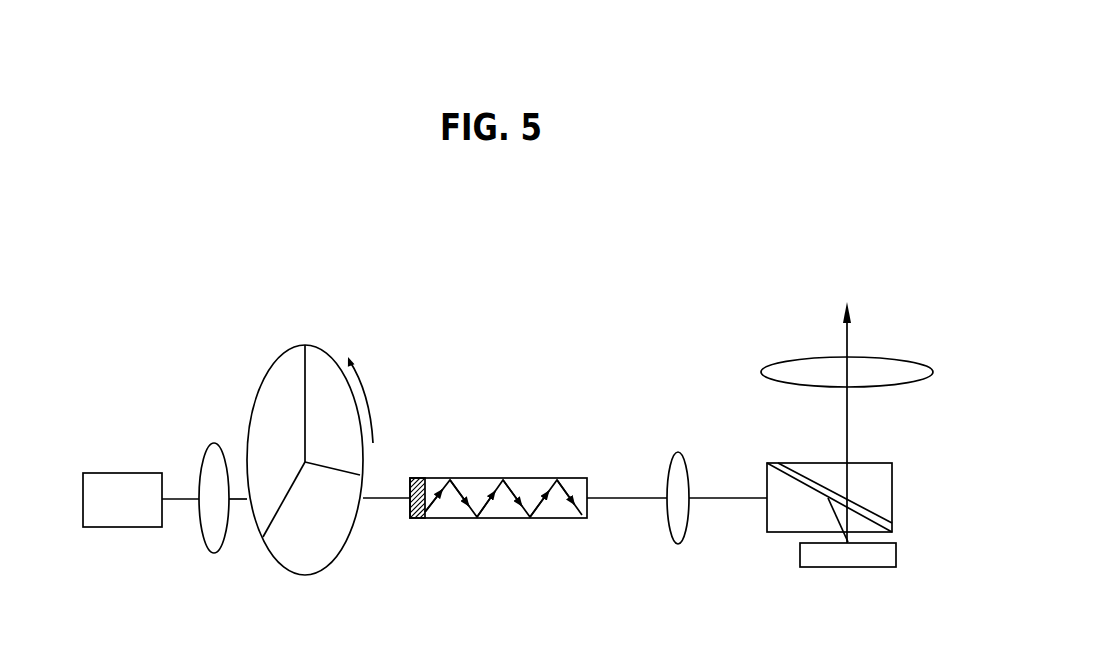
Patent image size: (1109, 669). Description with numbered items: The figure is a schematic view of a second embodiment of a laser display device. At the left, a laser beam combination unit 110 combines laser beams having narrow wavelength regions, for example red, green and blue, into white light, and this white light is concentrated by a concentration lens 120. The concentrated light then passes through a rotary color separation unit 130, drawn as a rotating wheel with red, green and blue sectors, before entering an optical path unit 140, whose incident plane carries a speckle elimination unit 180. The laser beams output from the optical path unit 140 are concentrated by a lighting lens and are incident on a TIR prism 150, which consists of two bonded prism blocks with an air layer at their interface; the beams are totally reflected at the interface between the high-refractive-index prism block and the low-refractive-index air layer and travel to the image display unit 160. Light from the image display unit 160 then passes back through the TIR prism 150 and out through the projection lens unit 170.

The laser beam combination unit 110 is at (120, 472).
The concentration lens 120 is at (207, 550).
The rotary color separation unit 130 is at (305, 343).
The optical path unit 140 is at (480, 478).
The TIR prism 150 is at (893, 492).
The image display unit 160 is at (845, 568).
The projection lens unit 170 is at (880, 358).
The speckle elimination unit 180 is at (418, 520).